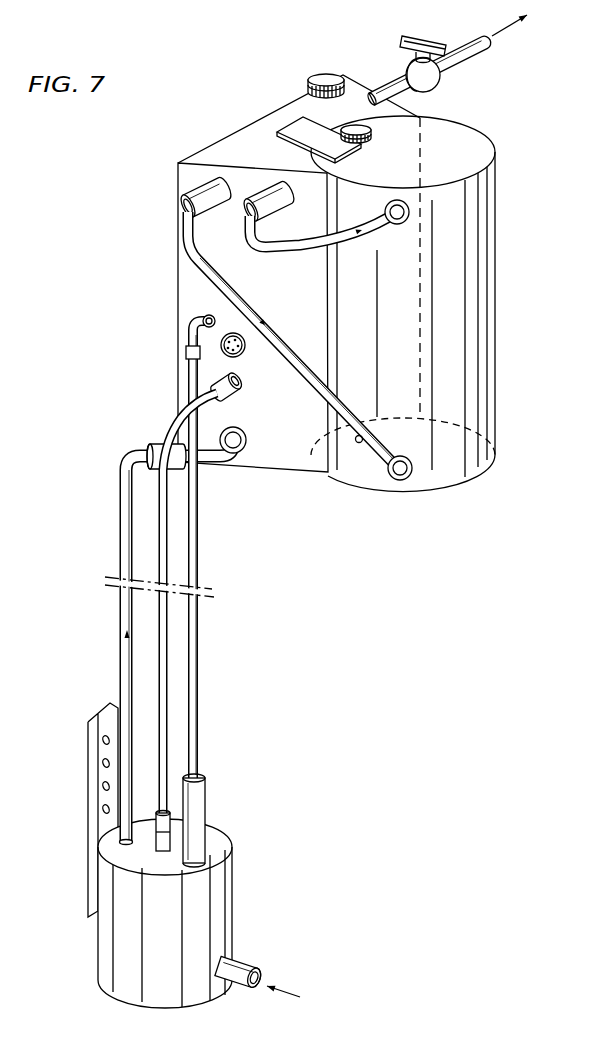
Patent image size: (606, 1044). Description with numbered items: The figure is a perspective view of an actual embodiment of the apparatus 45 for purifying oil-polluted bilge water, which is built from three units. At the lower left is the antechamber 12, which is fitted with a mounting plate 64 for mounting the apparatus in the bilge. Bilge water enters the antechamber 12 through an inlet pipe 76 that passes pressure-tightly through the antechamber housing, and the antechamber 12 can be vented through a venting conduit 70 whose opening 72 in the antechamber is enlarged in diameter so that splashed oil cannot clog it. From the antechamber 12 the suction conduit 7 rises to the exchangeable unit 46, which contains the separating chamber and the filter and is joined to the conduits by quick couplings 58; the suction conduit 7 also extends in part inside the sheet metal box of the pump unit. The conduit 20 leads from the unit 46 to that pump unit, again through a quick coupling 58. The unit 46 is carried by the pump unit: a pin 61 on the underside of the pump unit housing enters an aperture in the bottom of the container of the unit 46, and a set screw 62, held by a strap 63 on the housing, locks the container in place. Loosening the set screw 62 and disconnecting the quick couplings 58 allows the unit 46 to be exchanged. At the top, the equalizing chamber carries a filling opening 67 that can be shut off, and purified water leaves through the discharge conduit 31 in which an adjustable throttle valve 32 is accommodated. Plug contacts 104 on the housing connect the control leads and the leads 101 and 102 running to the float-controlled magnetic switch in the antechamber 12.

The suction conduit 7 is at (300, 248).
The antechamber 12 is at (238, 888).
The conduit 20 is at (270, 318).
The discharge conduit 31 is at (493, 45).
The adjustable throttle valve 32 is at (441, 79).
The apparatus 45 is at (314, 539).
The unit 46 is at (494, 313).
The quick coupling 58 is at (257, 193).
The pin 61 is at (356, 447).
The set screw 62 is at (356, 126).
The strap 63 is at (300, 126).
The mounting plate 64 is at (105, 754).
The filling opening 67 is at (322, 76).
The venting conduit 70 is at (203, 631).
The opening 72 is at (206, 800).
The inlet pipe 76 is at (258, 968).
The lead 101 is at (218, 622).
The lead 102 is at (167, 713).
The plug contacts 104 is at (226, 375).